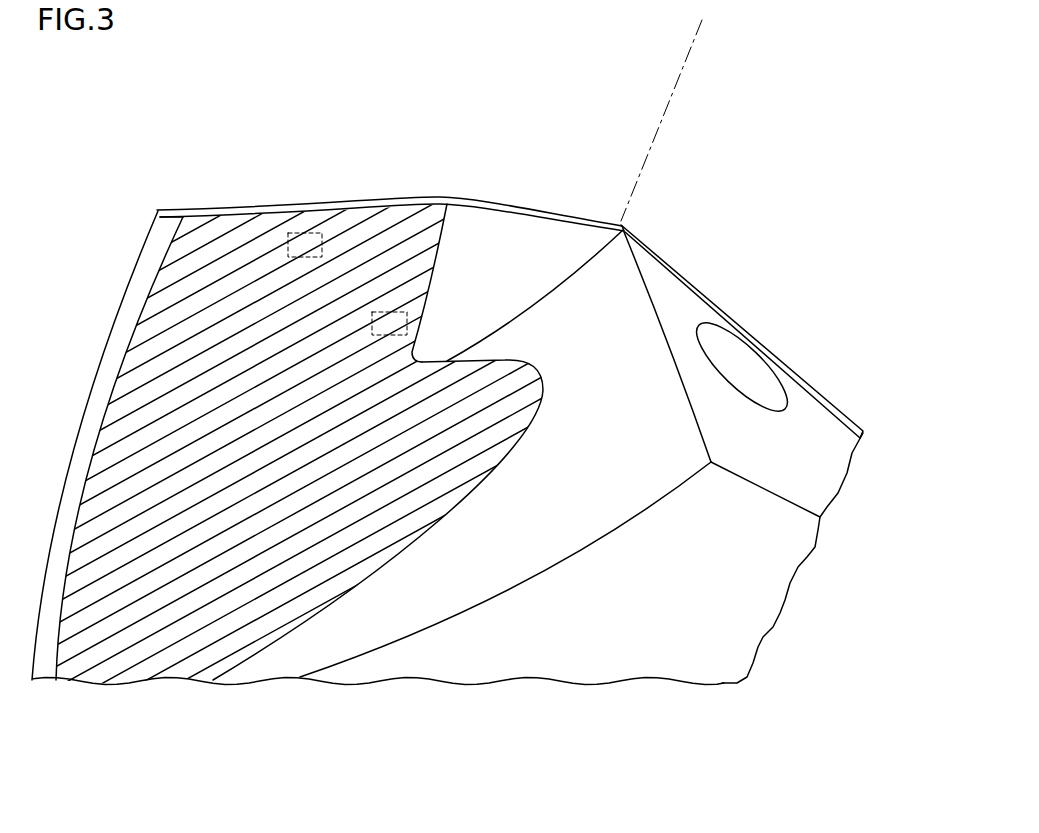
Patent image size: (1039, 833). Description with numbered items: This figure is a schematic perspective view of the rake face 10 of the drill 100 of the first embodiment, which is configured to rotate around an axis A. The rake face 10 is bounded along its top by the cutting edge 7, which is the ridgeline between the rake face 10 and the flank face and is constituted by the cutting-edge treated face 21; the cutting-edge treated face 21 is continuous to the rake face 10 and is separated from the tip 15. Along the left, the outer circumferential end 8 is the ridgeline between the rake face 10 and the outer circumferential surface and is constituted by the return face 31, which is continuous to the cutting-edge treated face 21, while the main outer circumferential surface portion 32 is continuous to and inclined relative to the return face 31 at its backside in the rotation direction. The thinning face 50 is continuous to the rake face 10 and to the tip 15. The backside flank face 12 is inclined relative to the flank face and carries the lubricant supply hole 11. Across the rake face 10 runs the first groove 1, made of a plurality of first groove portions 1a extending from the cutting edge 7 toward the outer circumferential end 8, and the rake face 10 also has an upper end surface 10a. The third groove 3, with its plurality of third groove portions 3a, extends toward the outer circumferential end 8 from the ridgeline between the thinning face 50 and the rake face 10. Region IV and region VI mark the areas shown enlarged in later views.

The drill 100 is at (775, 238).
The cutting edge 7 is at (228, 217).
The cutting-edge treated face 21 is at (270, 213).
The outer circumferential end 8 is at (132, 340).
The return face 31 is at (140, 295).
The first groove 1 is at (410, 157).
The first groove portions 1a is at (354, 227).
The rake face 10 is at (363, 121).
The upper end surface 10a is at (408, 273).
The third groove 3 is at (452, 157).
The third groove portions 3a is at (445, 428).
The tip 15 is at (624, 225).
The thinning face 50 is at (520, 262).
The lubricant supply hole 11 is at (787, 397).
The backside flank face 12 is at (825, 458).
The main outer circumferential surface portion 32 is at (755, 593).
The region IV is at (302, 233).
The region VI is at (380, 336).
The axis A is at (687, 57).